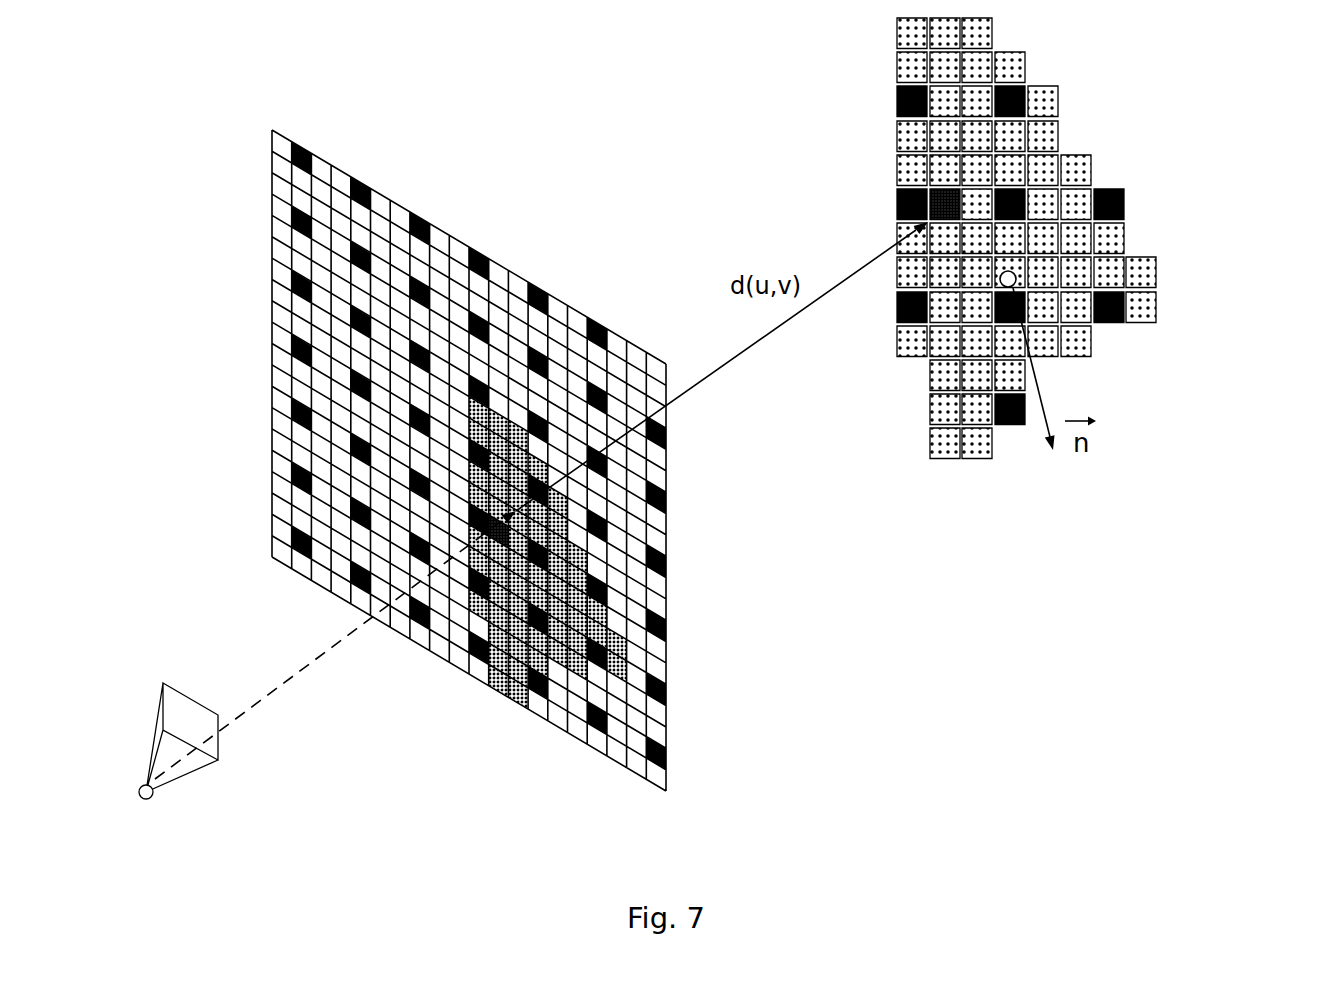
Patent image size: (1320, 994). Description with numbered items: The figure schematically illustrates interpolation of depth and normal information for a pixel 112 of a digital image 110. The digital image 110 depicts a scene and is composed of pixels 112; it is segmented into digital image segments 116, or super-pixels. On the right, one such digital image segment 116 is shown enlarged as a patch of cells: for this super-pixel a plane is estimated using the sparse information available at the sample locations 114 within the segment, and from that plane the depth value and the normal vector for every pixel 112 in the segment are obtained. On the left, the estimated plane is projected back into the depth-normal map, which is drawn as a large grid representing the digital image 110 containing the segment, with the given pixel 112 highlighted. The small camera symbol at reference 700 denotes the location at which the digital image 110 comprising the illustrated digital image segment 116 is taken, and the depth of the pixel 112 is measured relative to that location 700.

The digital image 110 is at (667, 678).
The pixel 112 is at (897, 165).
The sample location 114 is at (1157, 327).
The digital image segment 116 is at (1058, 133).
The location of the digital image 700 is at (153, 796).